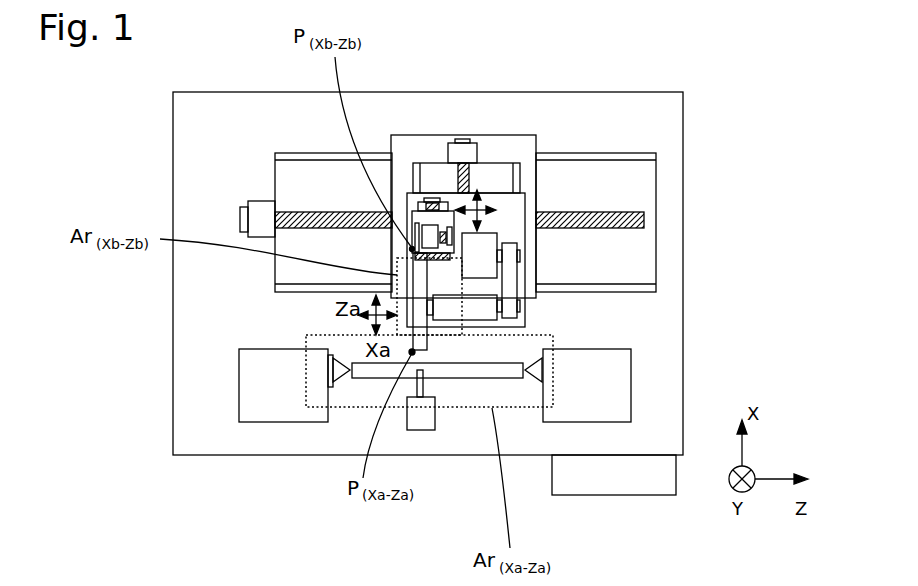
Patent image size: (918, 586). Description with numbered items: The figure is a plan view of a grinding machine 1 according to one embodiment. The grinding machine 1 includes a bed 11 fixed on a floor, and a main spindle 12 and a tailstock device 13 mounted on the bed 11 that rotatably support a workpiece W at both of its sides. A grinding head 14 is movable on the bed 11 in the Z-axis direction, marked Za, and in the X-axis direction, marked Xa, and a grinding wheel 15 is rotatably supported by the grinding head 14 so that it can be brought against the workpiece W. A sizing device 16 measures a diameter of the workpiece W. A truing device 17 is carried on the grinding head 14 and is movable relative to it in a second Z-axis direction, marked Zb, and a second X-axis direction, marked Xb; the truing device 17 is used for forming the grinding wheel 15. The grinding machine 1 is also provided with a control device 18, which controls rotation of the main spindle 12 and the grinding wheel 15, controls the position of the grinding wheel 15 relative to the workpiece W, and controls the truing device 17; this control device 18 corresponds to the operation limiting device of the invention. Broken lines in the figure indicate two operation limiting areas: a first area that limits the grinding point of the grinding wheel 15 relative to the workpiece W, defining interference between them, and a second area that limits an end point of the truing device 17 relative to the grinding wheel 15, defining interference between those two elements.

The grinding machine 1 is at (697, 72).
The bed 11 is at (635, 92).
The main spindle 12 is at (303, 422).
The tailstock device 13 is at (575, 422).
The grinding head 14 is at (522, 192).
The grinding wheel 15 is at (428, 340).
The sizing device 16 is at (420, 430).
The truing device 17 is at (413, 238).
The control device 18 is at (645, 495).
The workpiece W is at (510, 380).